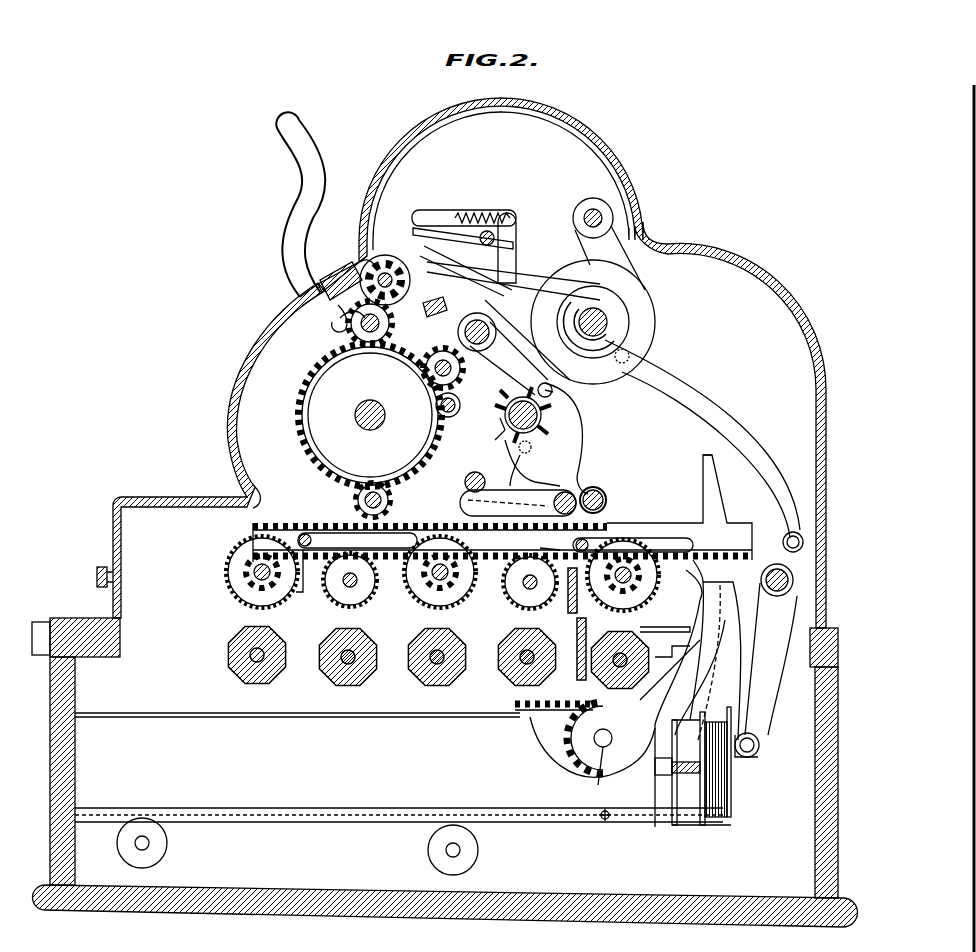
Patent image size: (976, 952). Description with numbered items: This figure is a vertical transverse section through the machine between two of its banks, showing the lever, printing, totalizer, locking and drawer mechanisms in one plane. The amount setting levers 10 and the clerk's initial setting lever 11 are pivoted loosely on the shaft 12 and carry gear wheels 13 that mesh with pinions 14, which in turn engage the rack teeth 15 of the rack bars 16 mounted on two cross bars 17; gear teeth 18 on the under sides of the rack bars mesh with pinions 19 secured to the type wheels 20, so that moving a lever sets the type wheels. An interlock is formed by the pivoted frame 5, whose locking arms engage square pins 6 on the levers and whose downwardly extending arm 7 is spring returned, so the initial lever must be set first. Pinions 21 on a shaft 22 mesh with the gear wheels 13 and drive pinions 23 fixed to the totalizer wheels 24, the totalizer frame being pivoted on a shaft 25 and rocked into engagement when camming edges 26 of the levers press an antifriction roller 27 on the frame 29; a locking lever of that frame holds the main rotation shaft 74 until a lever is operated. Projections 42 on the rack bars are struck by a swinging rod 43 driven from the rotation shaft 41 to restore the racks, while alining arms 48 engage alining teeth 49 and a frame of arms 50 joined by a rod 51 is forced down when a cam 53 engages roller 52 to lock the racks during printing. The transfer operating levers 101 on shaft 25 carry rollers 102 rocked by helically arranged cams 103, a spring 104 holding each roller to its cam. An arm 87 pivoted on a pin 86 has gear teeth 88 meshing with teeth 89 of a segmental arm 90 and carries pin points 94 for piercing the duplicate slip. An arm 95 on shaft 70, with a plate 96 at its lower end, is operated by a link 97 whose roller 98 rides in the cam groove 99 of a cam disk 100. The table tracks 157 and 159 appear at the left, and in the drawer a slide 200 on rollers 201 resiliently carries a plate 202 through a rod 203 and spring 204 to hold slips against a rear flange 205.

The pivoted frame 5 is at (332, 282).
The square pins 6 is at (318, 300).
The downwardly extending arm 7 is at (338, 318).
The amount setting levers 10 is at (320, 162).
The clerk's initial setting lever 11 is at (304, 586).
The shaft 12 is at (382, 423).
The gear wheels 13 is at (302, 416).
The pinions 14 is at (391, 499).
The rack teeth 15 is at (318, 522).
The rack bars 16 is at (730, 530).
The cross bars 17 is at (600, 540).
The gear teeth 18 is at (692, 589).
The pinions 19 is at (640, 586).
The type wheels 20 is at (428, 598).
The pinions 21 is at (340, 320).
The shaft 22 is at (370, 334).
The pinions 23 is at (372, 265).
The totalizer wheels 24 is at (392, 256).
The shaft 25 is at (466, 332).
The camming edges 26 is at (436, 380).
The antifriction roller 27 is at (450, 416).
The frame 29 is at (505, 354).
The rotation shaft 41 is at (503, 432).
The projections 42 is at (706, 455).
The swinging rod 43 is at (603, 494).
The alining arms 48 is at (462, 500).
The alining teeth 49 is at (545, 545).
The arms 50 is at (537, 481).
The rod 51 is at (467, 481).
The antifriction roller 52 is at (500, 487).
The cam 53 is at (552, 425).
The shaft 70 is at (783, 592).
The main rotation shaft 74 is at (607, 322).
The pin 86 is at (600, 780).
The arm 87 is at (682, 713).
The gear teeth 88 is at (574, 722).
The gear teeth 89 is at (522, 718).
The segmental arm 90 is at (713, 622).
The pin points 94 is at (672, 633).
The arm 95 is at (770, 661).
The plate 96 is at (745, 760).
The link 97 is at (736, 418).
The antifriction roller 98 is at (632, 360).
The cam groove 99 is at (625, 330).
The cam disk 100 is at (640, 276).
The transfer operating levers 101 is at (510, 289).
The antifriction rollers 102 is at (553, 391).
The cams 103 is at (531, 448).
The spring 104 is at (470, 214).
The track 157 is at (44, 620).
The track 159 is at (97, 577).
The slide 200 is at (620, 828).
The rollers 201 is at (600, 819).
The plate 202 is at (716, 820).
The rod 203 is at (665, 778).
The spring 204 is at (701, 769).
The flange 205 is at (735, 818).